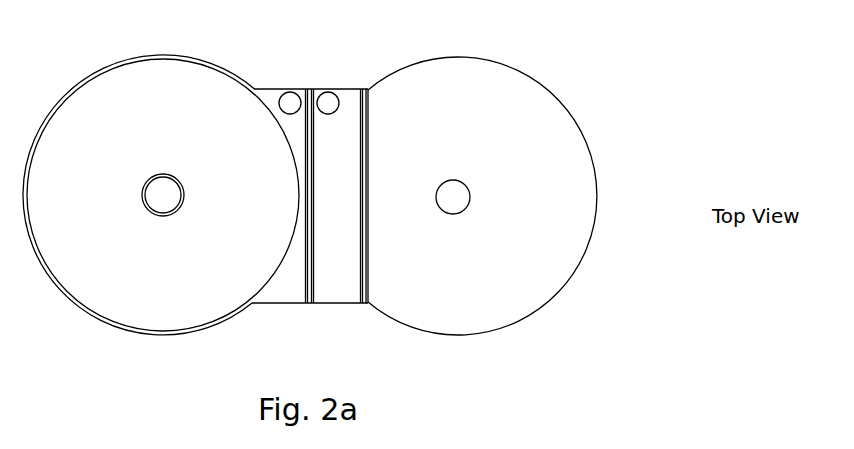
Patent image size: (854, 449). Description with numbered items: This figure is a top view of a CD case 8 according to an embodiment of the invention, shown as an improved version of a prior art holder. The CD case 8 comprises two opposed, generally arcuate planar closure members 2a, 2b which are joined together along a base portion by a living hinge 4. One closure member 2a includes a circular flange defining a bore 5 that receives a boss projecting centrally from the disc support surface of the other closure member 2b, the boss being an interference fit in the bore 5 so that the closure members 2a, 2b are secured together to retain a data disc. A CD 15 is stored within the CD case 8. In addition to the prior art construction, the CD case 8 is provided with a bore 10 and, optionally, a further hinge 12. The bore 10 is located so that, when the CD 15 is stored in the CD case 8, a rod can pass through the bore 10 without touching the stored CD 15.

The closure member 2a is at (470, 57).
The closure member 2b is at (163, 55).
The living hinge 4 is at (310, 305).
The bore 5 is at (468, 187).
The CD case 8 is at (568, 74).
The bore 10 is at (285, 92).
The hinge 12 is at (362, 305).
The CD 15 is at (174, 132).